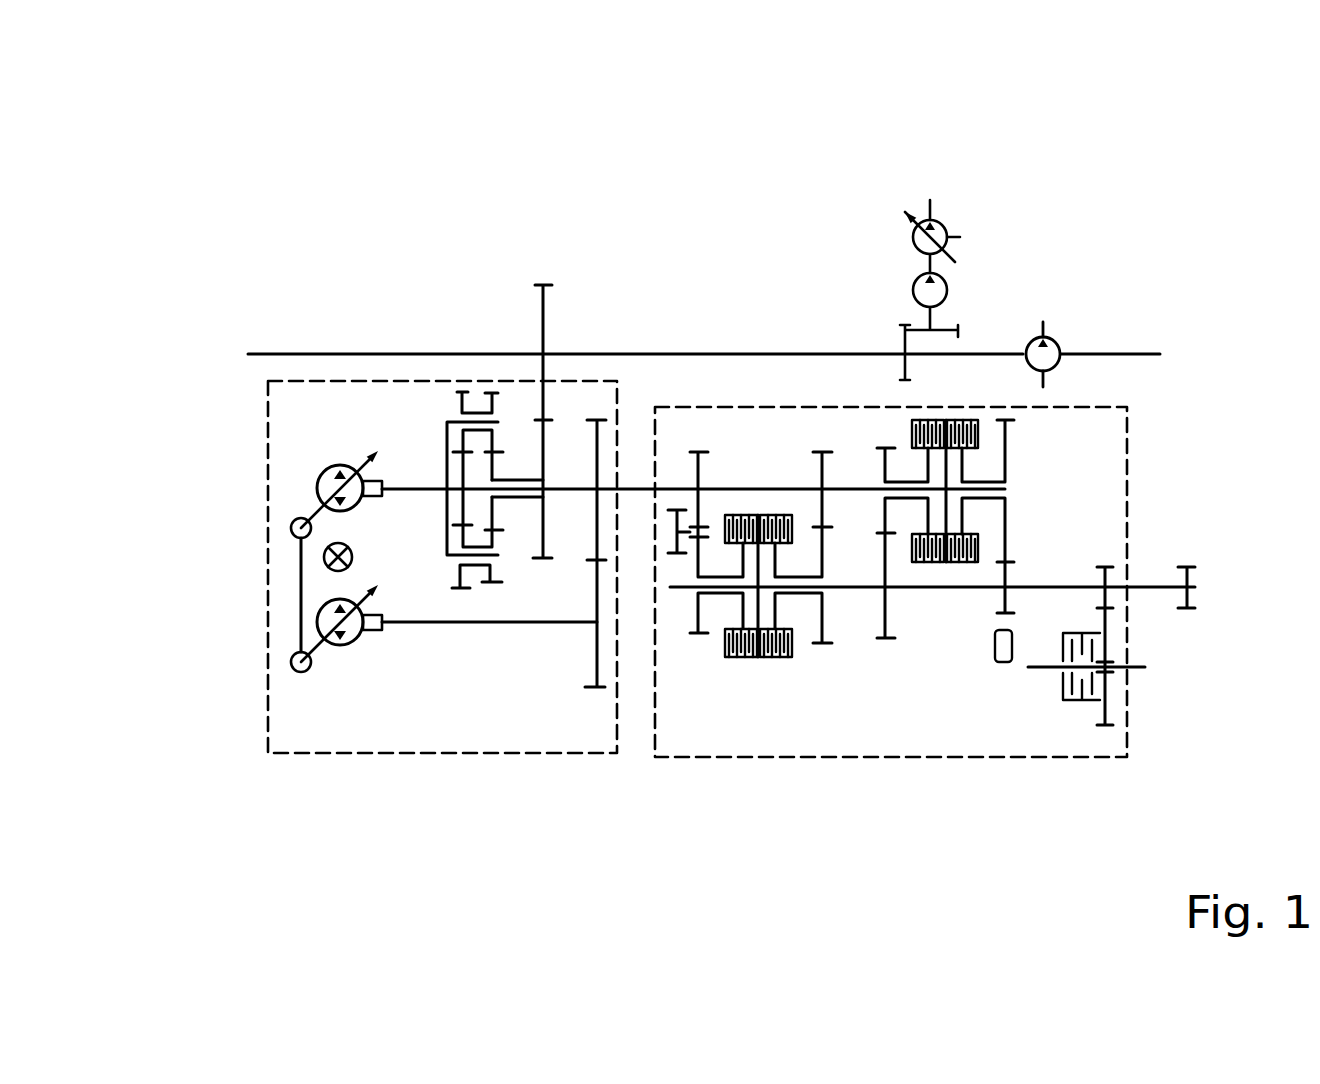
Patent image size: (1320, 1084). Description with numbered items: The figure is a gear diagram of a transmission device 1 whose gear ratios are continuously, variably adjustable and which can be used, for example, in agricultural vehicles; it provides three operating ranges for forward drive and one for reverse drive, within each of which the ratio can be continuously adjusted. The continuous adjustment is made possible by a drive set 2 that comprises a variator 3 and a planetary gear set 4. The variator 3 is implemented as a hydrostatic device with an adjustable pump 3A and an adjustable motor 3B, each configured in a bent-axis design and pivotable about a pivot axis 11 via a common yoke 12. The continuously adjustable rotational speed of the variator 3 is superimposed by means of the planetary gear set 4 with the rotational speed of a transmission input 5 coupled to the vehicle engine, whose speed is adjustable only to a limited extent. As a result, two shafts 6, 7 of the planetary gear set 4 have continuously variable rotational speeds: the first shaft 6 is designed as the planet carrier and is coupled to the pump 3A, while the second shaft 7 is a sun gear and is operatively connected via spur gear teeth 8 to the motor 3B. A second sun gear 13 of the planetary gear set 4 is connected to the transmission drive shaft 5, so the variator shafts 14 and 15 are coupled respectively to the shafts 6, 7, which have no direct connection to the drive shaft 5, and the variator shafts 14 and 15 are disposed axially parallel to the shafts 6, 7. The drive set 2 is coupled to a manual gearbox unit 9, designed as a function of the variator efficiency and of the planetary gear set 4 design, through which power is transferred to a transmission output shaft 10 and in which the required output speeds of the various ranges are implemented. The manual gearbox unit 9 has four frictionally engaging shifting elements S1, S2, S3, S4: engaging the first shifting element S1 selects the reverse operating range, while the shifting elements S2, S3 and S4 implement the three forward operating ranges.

The transmission device 1 is at (345, 315).
The drive set 2 is at (418, 757).
The variator 3 is at (296, 587).
The adjustable pump 3A is at (317, 487).
The adjustable motor 3B is at (318, 640).
The planetary gear set 4 is at (502, 387).
The transmission input 5 is at (485, 352).
The first shaft 6 is at (448, 422).
The second shaft 7 is at (485, 489).
The spur gear teeth 8 is at (600, 580).
The manual gearbox unit 9 is at (885, 763).
The transmission output shaft 10 is at (1148, 590).
The pivot axis 11 is at (324, 557).
The common yoke 12 is at (300, 613).
The second sun gear 13 is at (545, 448).
The variator shaft 14 is at (410, 489).
The variator shaft 15 is at (537, 623).
The first shifting element S1 is at (742, 505).
The second shifting element S2 is at (775, 505).
The third shifting element S3 is at (905, 430).
The fourth shifting element S4 is at (965, 410).